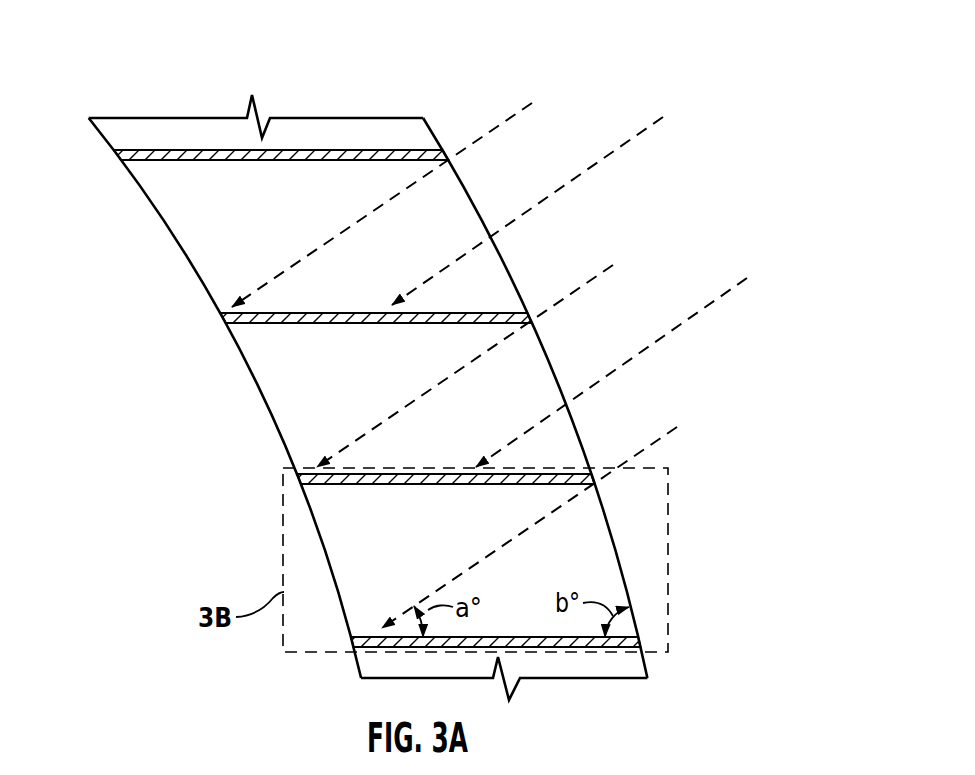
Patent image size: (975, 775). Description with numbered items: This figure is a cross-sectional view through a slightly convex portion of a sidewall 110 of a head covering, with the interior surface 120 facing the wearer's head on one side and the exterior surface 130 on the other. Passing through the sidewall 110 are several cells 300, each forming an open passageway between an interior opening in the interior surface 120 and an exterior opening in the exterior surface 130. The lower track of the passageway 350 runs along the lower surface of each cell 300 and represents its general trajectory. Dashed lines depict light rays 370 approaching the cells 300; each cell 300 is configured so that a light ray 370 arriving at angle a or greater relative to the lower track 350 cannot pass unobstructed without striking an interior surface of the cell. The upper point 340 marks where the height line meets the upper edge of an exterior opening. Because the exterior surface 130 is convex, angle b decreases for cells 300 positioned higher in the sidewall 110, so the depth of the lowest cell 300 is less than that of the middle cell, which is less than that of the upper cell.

The sidewall 110 is at (374, 353).
The interior surface 120 is at (268, 420).
The exterior surface 130 is at (578, 429).
The cell 300 is at (194, 236).
The upper point 340 is at (594, 484).
The lower track of the passageway 350 is at (510, 302).
The light ray 370 is at (620, 145).